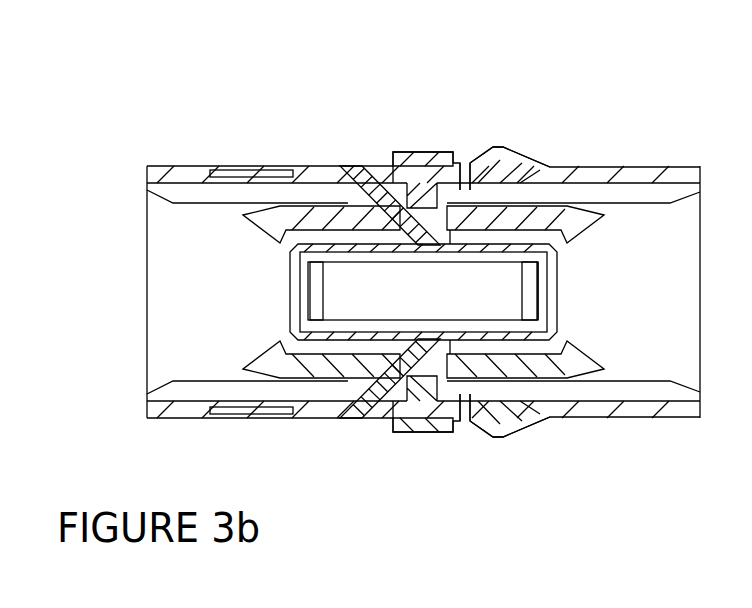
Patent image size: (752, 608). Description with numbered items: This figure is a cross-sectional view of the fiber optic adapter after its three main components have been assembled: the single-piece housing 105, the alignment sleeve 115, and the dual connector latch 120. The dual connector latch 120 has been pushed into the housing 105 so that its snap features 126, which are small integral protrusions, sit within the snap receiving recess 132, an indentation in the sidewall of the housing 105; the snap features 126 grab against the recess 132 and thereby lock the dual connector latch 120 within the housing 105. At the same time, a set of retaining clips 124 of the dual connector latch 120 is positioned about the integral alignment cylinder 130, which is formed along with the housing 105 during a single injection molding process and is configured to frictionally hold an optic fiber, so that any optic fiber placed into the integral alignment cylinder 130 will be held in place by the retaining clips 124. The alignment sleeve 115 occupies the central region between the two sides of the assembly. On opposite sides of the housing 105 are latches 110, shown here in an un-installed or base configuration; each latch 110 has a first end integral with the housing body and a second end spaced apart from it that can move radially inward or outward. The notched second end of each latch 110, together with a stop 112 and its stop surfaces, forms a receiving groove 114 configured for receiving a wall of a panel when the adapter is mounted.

The housing 105 is at (147, 166).
The latch 110 is at (505, 143).
The stop 112 is at (468, 508).
The receiving groove 114 is at (474, 441).
The alignment sleeve 115 is at (423, 292).
The dual connector latch 120 is at (255, 235).
The retaining clips 124 is at (600, 228).
The snap features 126 is at (353, 400).
The integral alignment cylinder 130 is at (545, 292).
The snap receiving recesses 132 is at (398, 500).